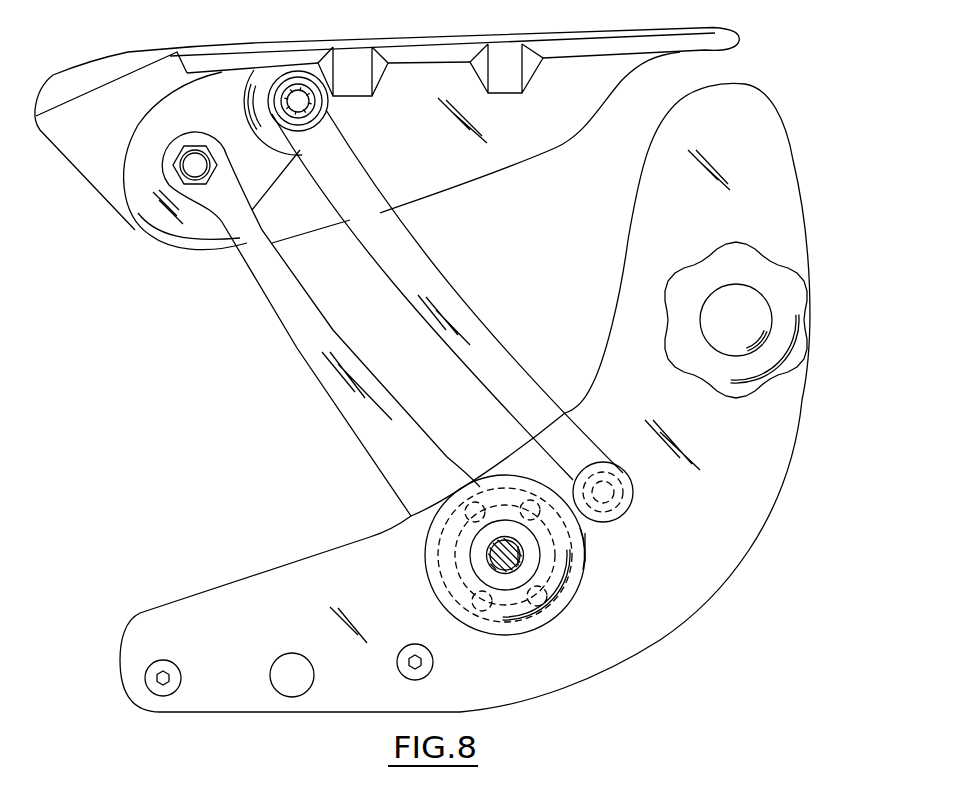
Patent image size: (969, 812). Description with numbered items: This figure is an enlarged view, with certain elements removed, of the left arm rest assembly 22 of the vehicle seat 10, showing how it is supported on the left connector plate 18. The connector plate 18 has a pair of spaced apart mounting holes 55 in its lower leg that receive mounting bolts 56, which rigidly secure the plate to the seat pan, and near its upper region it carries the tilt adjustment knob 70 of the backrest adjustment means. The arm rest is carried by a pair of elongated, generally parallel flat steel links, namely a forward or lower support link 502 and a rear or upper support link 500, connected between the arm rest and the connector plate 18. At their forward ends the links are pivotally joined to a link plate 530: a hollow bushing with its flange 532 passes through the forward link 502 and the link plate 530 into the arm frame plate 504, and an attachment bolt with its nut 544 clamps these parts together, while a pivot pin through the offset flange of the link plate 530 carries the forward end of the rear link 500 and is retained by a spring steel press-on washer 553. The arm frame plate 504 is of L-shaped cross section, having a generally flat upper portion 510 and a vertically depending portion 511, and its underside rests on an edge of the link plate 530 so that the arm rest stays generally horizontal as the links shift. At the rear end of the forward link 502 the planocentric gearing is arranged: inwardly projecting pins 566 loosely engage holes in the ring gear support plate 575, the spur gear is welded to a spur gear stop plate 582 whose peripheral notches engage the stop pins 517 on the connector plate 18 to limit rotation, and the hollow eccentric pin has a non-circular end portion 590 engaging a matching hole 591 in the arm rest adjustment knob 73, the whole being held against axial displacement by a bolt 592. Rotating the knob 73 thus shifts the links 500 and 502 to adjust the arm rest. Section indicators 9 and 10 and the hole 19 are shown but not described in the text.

The upper portion 510 is at (569, 31).
The link plate 530 is at (140, 112).
The nut 544 is at (187, 163).
The forward support link 502 is at (250, 270).
The left arm rest assembly 22 is at (296, 348).
The pivot pin 532 is at (312, 107).
The press-on washer 553 is at (316, 124).
The rear support link 500 is at (413, 243).
The section line 9 is at (640, 472).
The vehicle seat 10 is at (328, 88).
The arm frame plate 504 is at (540, 162).
The vertically depending portion 511 is at (572, 135).
The left connector plate 18 is at (797, 187).
The tilt adjustment knob 70 is at (800, 283).
The stop pins 517 is at (517, 447).
The pins 566 is at (400, 513).
The non-circular end portion 590 is at (527, 566).
The hole 591 is at (488, 546).
The bolt 592 is at (478, 562).
The spur gear stop plate 582 is at (565, 617).
The ring gear support plate 575 is at (587, 560).
The arm rest adjustment knob 73 is at (587, 540).
The mounting bolts 56 is at (147, 675).
The mounting holes 55 is at (181, 684).
The mounting hole 19 is at (272, 668).